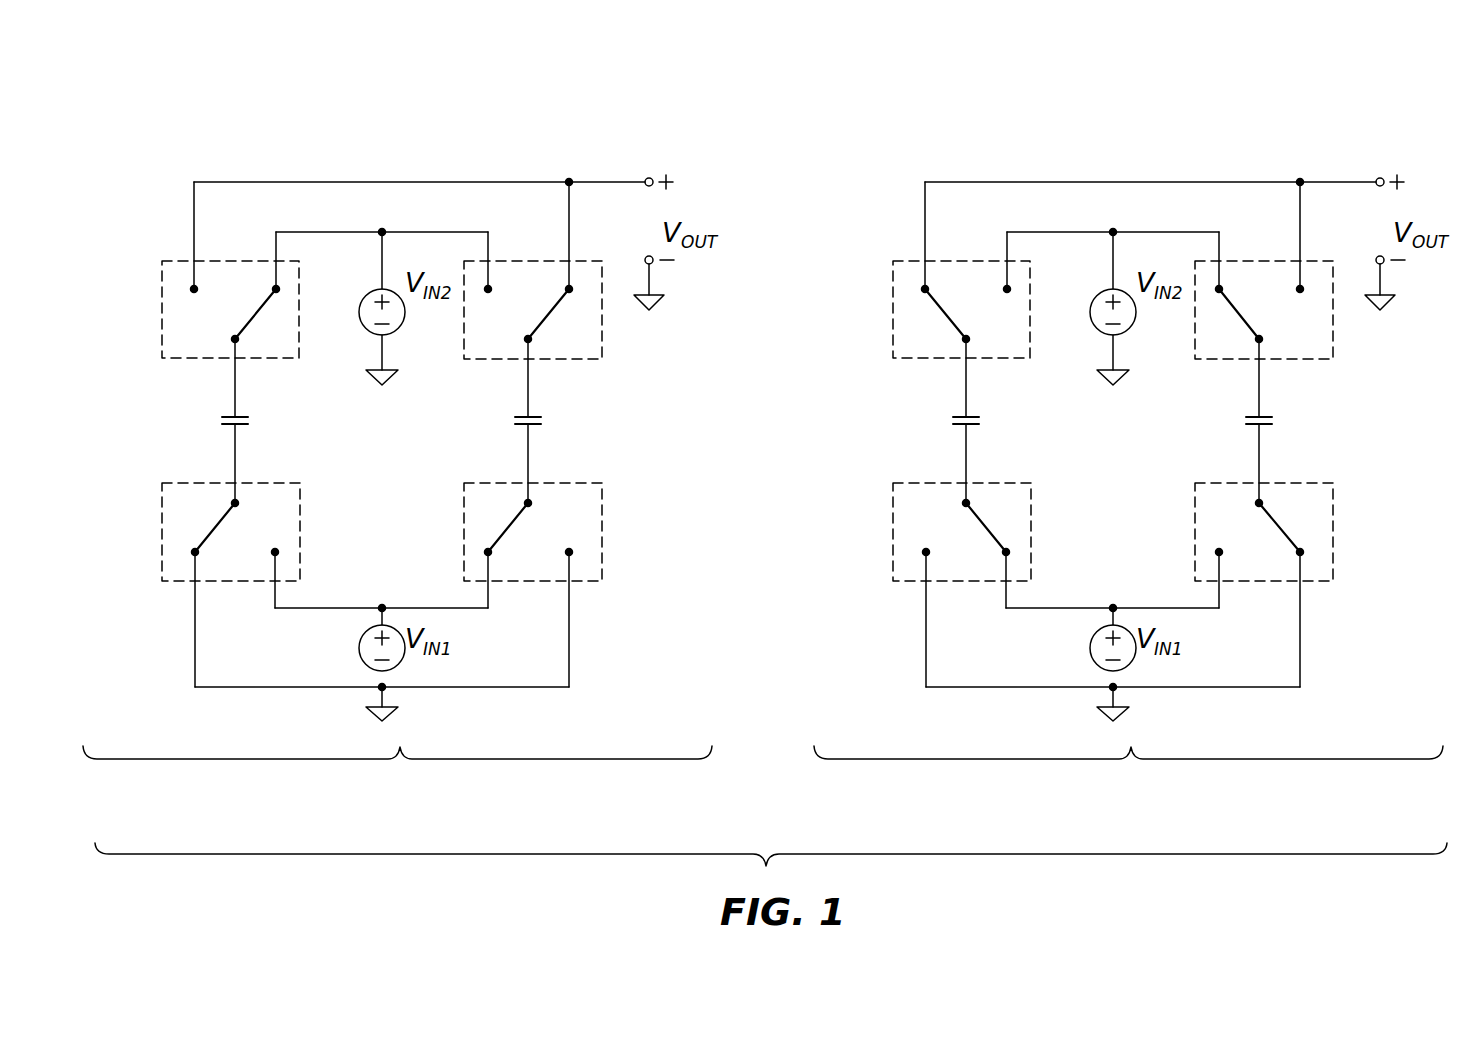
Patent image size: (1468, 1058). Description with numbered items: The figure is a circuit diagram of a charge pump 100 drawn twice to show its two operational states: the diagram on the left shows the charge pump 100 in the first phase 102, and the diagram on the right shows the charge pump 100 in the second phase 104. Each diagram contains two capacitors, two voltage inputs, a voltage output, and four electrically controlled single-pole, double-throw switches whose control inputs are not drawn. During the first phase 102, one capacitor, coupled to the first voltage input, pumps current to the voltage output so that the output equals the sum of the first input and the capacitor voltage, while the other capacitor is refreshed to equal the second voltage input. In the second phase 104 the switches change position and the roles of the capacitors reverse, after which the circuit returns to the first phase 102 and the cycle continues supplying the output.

The charge pump 100 is at (191, 134).
The first phase 102 is at (398, 764).
The second phase 104 is at (1129, 764).